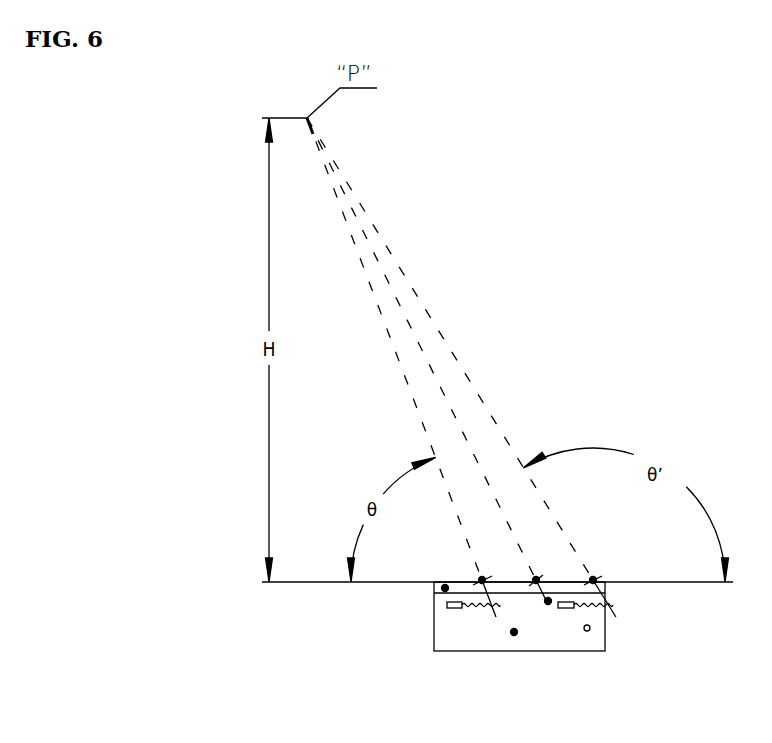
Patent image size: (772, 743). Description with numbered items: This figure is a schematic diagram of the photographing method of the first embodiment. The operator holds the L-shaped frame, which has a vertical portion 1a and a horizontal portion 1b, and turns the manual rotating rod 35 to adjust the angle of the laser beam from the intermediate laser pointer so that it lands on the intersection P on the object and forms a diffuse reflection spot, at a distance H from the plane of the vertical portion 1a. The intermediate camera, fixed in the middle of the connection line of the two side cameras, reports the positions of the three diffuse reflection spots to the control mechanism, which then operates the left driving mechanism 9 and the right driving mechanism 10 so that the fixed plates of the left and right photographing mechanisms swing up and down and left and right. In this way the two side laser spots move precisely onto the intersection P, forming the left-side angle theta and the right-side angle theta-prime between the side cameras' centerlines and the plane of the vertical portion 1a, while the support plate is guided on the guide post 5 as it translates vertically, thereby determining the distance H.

The vertical portion 1a is at (408, 614).
The horizontal portion 1b is at (545, 663).
The guide post 5 is at (614, 661).
The left driving mechanism 9 is at (459, 649).
The right driving mechanism 10 is at (620, 628).
The manual rotating rod 35 is at (527, 611).